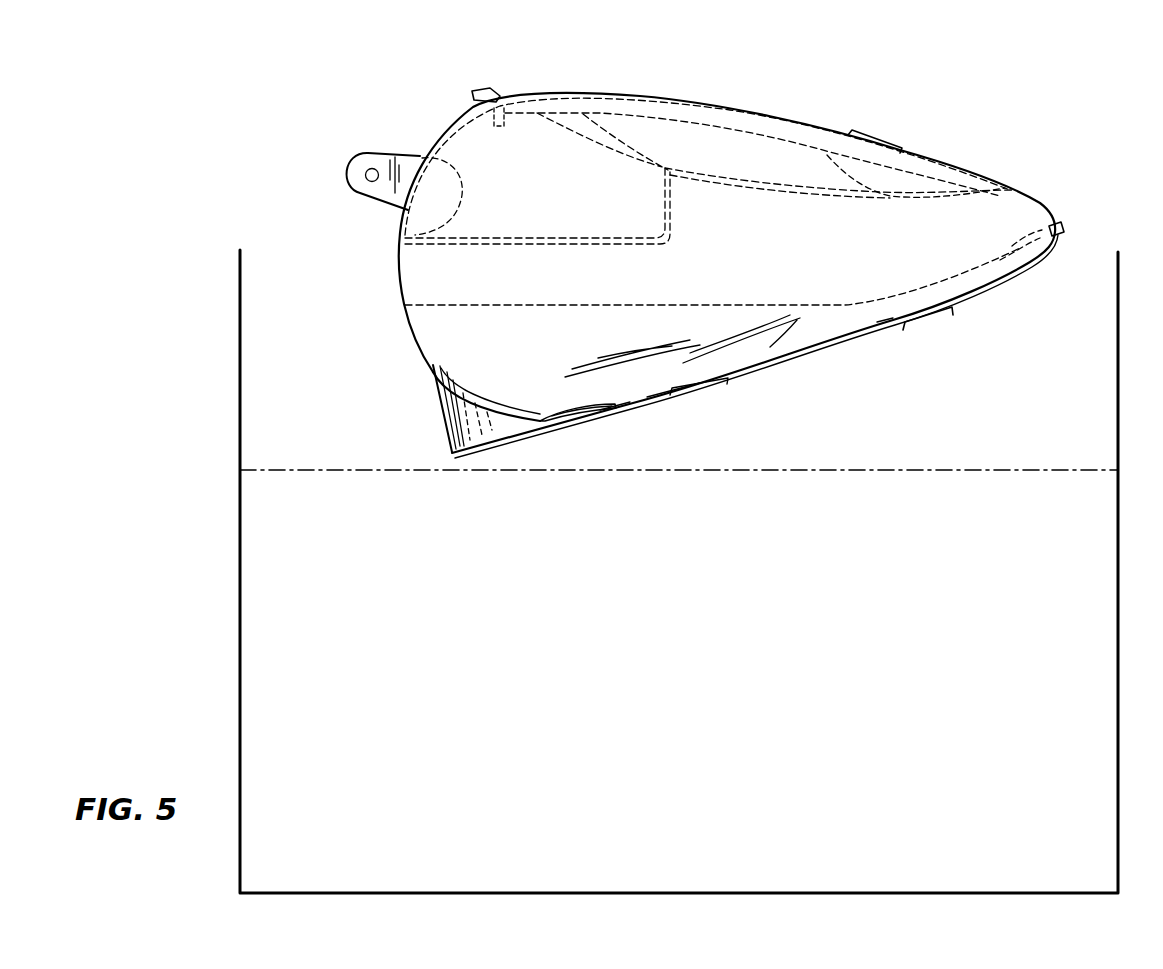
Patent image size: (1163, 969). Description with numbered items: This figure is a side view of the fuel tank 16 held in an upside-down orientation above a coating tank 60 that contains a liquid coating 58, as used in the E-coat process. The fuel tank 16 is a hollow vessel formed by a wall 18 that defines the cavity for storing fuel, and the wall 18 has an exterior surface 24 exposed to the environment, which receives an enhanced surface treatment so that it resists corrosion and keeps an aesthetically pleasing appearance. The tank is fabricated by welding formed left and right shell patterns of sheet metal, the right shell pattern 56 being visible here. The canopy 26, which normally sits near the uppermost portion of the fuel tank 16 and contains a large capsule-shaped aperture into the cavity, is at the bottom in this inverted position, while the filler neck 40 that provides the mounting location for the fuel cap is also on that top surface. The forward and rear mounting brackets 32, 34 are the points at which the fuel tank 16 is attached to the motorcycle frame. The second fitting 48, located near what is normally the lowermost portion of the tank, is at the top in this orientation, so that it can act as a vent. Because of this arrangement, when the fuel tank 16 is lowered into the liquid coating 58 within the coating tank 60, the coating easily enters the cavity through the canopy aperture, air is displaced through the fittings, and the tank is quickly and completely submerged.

The fuel tank 16 is at (851, 95).
The wall 18 is at (455, 327).
The exterior surface 24 is at (748, 278).
The canopy 26 is at (462, 422).
The forward mounting bracket 32 is at (375, 192).
The rear mounting bracket 34 is at (1058, 236).
The filler neck 40 is at (583, 418).
The second fitting 48 is at (484, 92).
The right shell pattern 56 is at (889, 174).
The liquid coating 58 is at (824, 468).
The coating tank 60 is at (1118, 350).